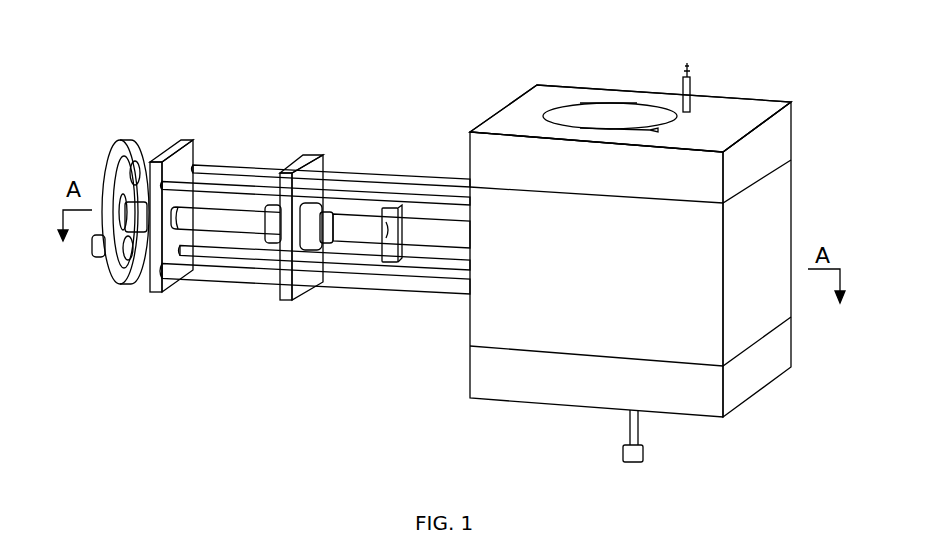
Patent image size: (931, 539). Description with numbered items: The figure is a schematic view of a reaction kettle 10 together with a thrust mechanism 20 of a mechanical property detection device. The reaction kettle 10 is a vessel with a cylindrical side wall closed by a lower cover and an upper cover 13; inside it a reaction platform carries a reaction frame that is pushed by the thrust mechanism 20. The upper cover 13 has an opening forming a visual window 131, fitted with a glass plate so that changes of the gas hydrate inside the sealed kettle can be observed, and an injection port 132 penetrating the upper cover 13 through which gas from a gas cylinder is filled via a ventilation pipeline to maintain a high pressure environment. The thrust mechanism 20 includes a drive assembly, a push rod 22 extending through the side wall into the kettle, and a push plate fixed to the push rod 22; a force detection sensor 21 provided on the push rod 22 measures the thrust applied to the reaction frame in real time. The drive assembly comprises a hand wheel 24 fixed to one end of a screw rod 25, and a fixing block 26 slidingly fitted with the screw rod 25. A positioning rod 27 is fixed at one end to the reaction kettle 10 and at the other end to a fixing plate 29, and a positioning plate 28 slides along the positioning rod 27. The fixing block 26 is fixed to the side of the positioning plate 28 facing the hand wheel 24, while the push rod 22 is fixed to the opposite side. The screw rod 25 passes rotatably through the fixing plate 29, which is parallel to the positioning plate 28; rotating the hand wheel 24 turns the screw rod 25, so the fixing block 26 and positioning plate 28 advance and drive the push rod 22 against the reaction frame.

The reaction kettle 10 is at (518, 341).
The upper cover 13 is at (503, 118).
The visual window 131 is at (568, 105).
The injection port 132 is at (693, 82).
The thrust mechanism 20 is at (158, 110).
The force detection sensor 21 is at (385, 208).
The push rod 22 is at (425, 237).
The hand wheel 24 is at (118, 153).
The screw rod 25 is at (208, 215).
The fixing block 26 is at (272, 245).
The positioning rod 27 is at (223, 163).
The positioning plate 28 is at (320, 153).
The fixing plate 29 is at (150, 280).